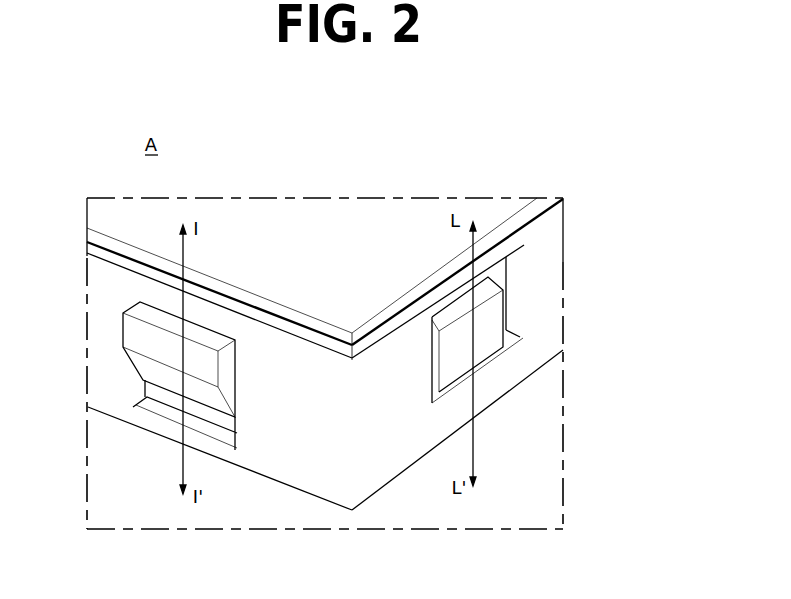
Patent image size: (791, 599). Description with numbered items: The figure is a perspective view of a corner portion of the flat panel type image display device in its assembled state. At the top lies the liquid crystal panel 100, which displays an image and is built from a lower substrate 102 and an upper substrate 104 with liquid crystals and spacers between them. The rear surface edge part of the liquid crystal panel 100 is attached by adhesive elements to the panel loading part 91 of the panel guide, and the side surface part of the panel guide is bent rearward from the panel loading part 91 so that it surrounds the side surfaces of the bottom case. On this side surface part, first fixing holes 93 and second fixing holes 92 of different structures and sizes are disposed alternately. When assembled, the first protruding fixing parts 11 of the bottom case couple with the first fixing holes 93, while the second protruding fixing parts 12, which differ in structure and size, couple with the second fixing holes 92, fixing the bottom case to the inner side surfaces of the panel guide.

The liquid crystal panel 100 is at (385, 262).
The upper substrate 104 is at (538, 195).
The lower substrate 102 is at (536, 213).
The panel loading part 91 is at (552, 263).
The first protruding fixing part 11 is at (493, 322).
The second protruding fixing part 12 is at (130, 342).
The first fixing hole 93 is at (495, 355).
The second fixing hole 92 is at (137, 403).